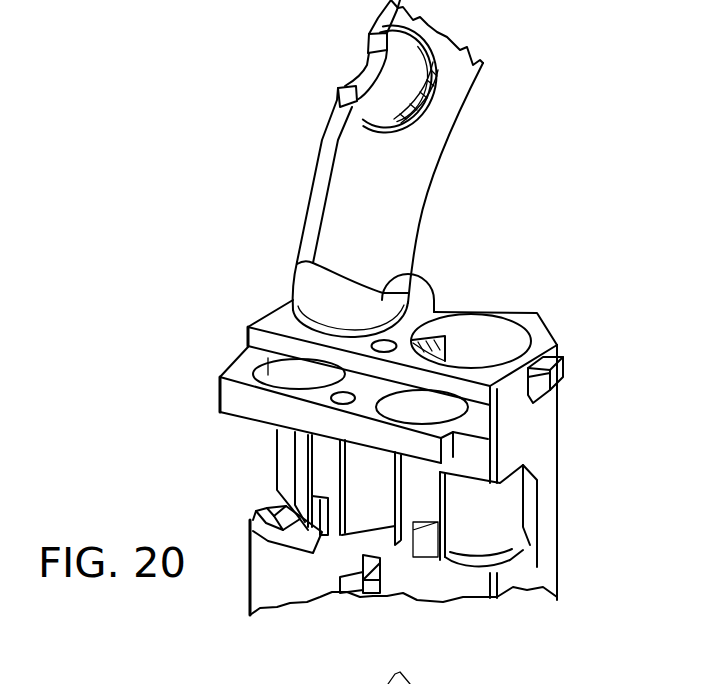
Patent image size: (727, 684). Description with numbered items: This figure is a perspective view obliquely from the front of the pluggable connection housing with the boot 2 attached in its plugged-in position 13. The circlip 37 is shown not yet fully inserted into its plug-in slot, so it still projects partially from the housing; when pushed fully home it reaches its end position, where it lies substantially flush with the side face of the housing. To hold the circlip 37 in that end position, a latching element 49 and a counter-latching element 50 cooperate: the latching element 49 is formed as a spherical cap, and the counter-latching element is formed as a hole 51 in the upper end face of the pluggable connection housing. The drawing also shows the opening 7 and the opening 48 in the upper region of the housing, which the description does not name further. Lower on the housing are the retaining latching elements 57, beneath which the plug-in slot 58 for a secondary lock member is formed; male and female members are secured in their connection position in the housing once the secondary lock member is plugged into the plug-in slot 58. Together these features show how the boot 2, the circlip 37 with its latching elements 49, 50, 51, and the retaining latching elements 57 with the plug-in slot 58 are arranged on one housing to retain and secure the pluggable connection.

The boot 2 is at (430, 168).
The plugged-in position 13 is at (458, 148).
The receiving opening 7 is at (503, 337).
The circlip 37 is at (373, 456).
The opening 48 is at (247, 378).
The latching element 49 is at (331, 398).
The counter-latching element 50 is at (435, 290).
The hole 51 is at (383, 341).
The retaining latching elements 57 is at (503, 517).
The plug-in slot 58 is at (373, 582).